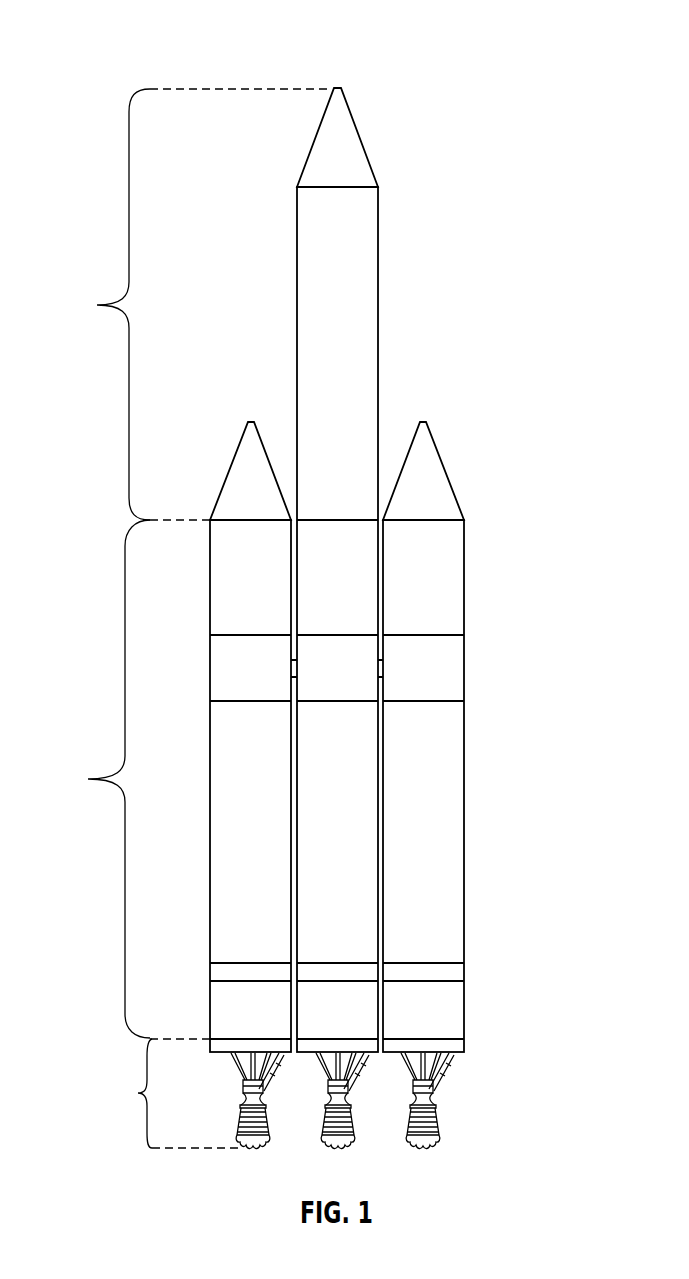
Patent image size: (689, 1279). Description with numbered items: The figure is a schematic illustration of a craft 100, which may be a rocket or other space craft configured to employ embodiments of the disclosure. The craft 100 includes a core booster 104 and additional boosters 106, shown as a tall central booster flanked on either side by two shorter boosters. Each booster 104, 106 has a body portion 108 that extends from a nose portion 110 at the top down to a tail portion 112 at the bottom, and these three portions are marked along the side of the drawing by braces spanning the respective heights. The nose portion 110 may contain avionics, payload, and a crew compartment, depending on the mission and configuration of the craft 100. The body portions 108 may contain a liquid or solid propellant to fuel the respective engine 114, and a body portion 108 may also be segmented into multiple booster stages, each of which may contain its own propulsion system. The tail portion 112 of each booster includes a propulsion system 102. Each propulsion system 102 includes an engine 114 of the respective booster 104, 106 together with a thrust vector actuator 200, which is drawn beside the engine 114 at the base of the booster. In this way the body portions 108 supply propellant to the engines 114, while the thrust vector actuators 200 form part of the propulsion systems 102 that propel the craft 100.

The craft 100 is at (450, 38).
The propulsion system 102 is at (474, 1110).
The core booster 104 is at (360, 258).
The additional boosters 106 is at (218, 613).
The body portion 108 is at (128, 779).
The nose portion 110 is at (195, 304).
The tail portion 112 is at (170, 1093).
The engine 114 is at (230, 1104).
The thrust vector actuator 200 is at (481, 1077).